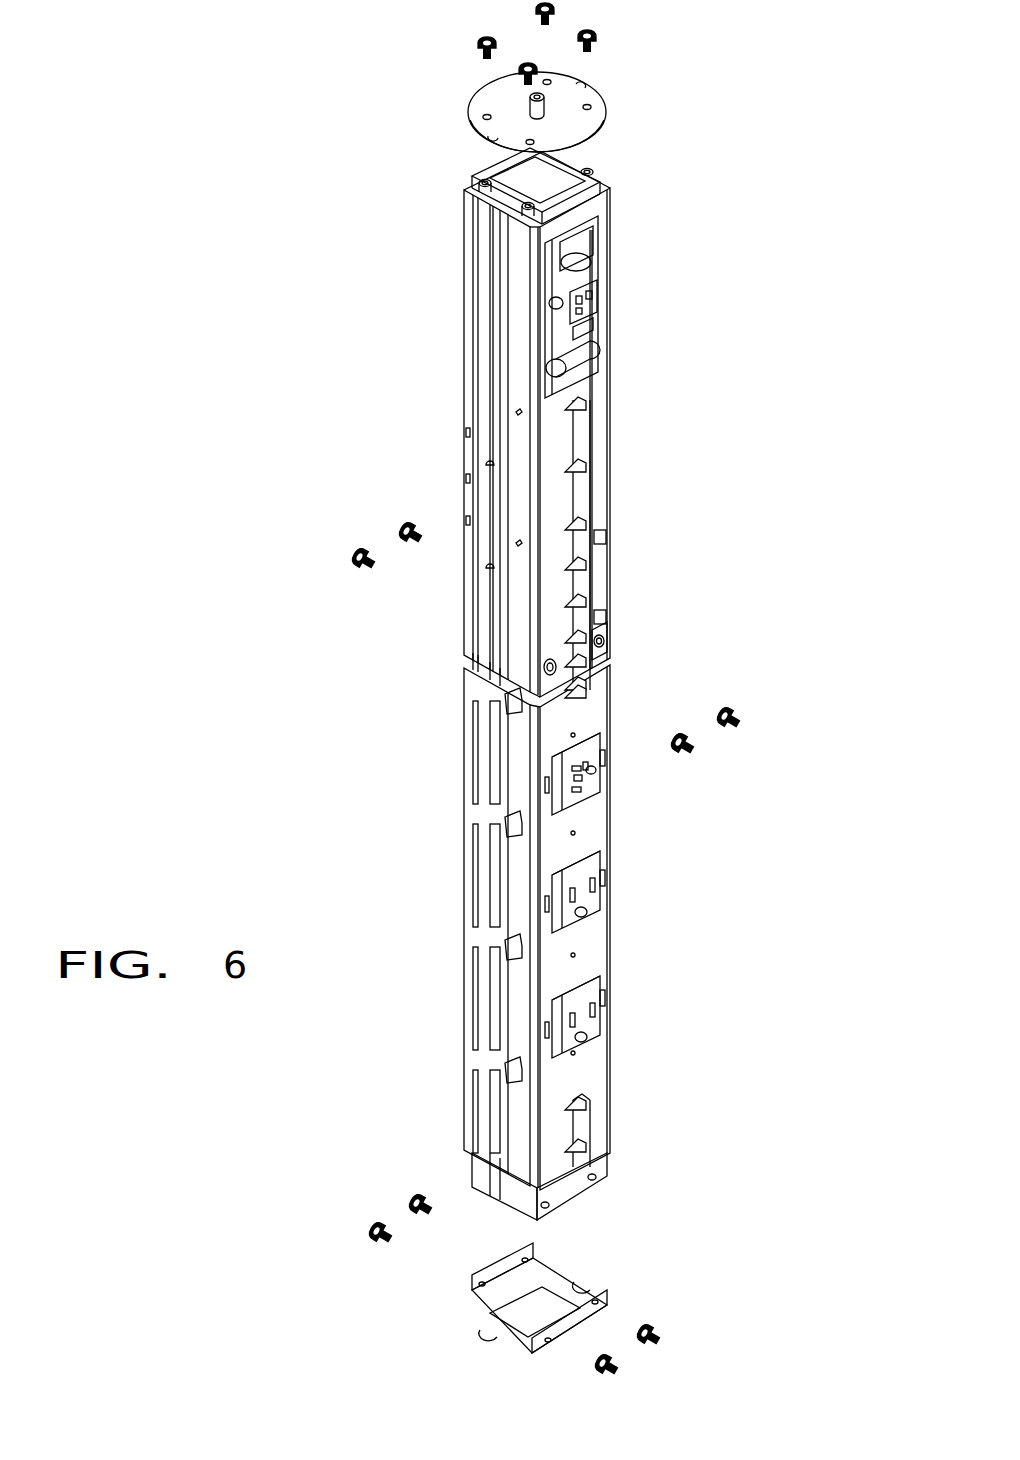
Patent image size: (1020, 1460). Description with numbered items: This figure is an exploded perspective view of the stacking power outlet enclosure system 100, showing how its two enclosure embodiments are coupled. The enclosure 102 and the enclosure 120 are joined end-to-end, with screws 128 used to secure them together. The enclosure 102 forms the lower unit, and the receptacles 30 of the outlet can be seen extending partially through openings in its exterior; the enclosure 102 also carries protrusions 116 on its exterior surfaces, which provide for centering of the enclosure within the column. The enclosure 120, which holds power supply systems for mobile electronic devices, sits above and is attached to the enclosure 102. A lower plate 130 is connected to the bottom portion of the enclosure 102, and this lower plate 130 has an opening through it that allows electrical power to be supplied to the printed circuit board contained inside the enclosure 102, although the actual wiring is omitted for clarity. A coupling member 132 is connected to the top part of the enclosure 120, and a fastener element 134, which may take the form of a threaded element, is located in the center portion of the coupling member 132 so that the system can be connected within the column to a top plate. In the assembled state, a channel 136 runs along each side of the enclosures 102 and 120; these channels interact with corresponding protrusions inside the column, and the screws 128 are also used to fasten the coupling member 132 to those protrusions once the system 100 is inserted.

The stacking power outlet enclosure system 100 is at (280, 199).
The enclosure 102 is at (682, 932).
The enclosure 120 is at (662, 409).
The protrusions 116 is at (585, 493).
The screws 128 is at (358, 556).
The lower plate 130 is at (595, 1290).
The coupling member 132 is at (598, 126).
The fastener element 134 is at (543, 97).
The channel 136 is at (490, 188).
The receptacles 30 is at (595, 1030).